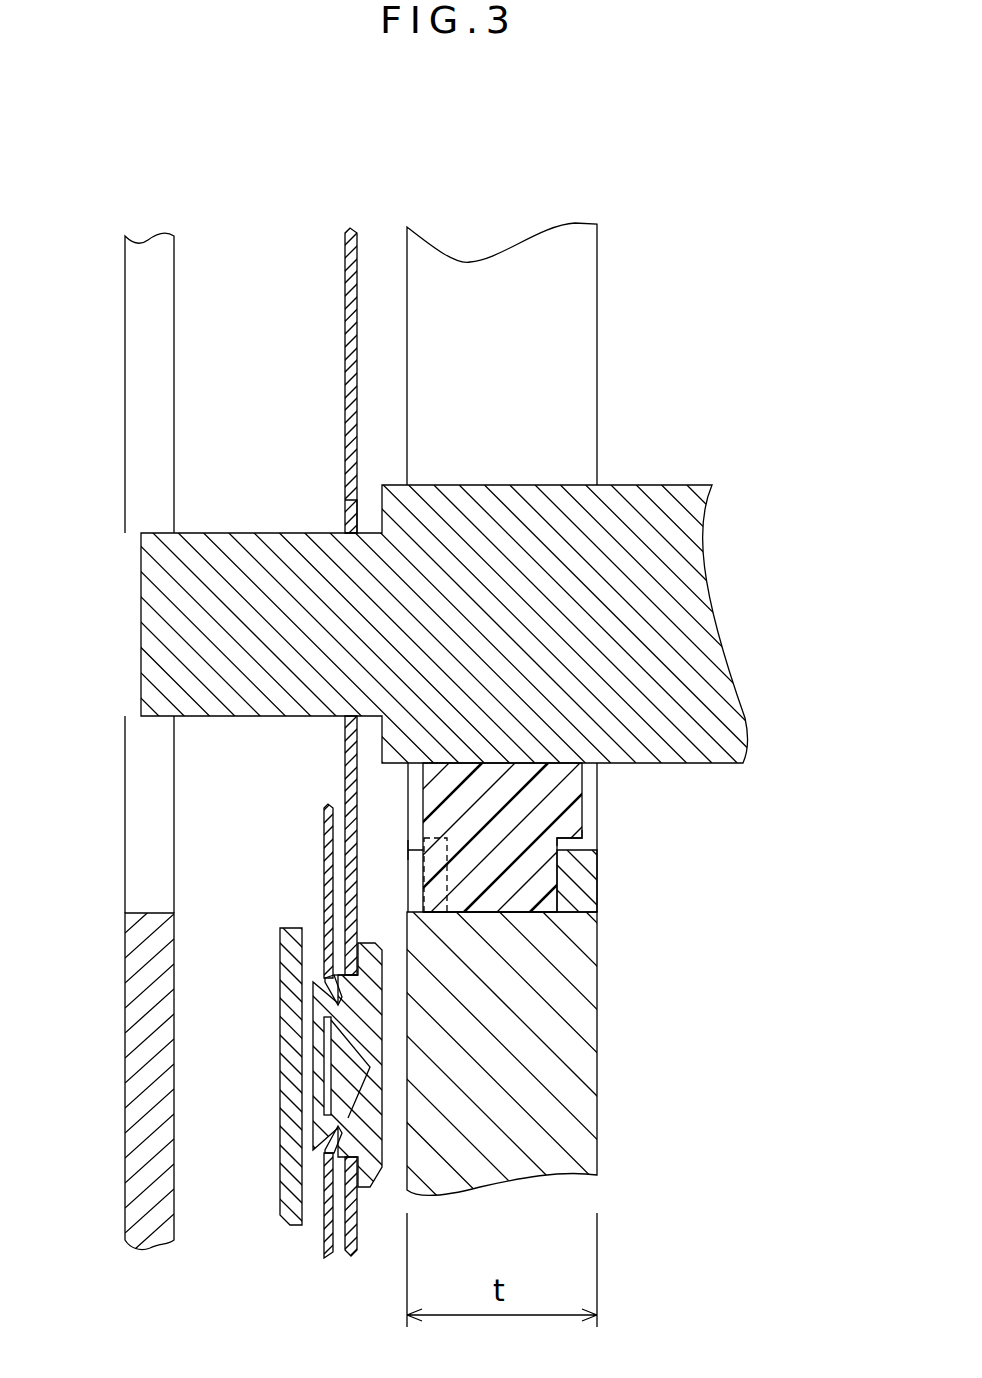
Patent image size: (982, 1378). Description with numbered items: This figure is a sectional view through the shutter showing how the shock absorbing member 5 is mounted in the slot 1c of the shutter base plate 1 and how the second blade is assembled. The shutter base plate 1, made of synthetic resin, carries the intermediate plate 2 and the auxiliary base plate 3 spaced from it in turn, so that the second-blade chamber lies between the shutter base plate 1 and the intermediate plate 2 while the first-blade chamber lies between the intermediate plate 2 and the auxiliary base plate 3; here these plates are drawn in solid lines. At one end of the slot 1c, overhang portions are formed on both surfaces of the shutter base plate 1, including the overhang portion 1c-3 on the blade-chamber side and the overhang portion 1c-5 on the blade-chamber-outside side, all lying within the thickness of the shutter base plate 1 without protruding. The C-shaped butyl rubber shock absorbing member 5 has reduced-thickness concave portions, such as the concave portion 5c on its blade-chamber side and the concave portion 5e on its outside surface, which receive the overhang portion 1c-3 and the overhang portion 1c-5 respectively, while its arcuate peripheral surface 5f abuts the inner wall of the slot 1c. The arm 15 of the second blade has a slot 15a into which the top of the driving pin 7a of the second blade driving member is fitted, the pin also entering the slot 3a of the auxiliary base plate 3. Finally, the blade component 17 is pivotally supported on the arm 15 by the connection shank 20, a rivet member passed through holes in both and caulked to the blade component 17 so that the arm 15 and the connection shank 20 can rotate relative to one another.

The shutter base plate 1 is at (563, 1138).
The slot 1c is at (578, 312).
The overhang portion 1c-3 is at (415, 875).
The overhang portion 1c-5 is at (573, 875).
The intermediate plate 2 is at (292, 1157).
The auxiliary base plate 3 is at (140, 1183).
The slot 3a is at (140, 430).
The shock absorbing member 5 is at (567, 803).
The concave portion 5c is at (424, 842).
The concave portion 5e is at (585, 845).
The arcuate peripheral surface 5f is at (517, 913).
The driving pin 7a is at (630, 518).
The arm 15 is at (345, 352).
The slot 15a is at (340, 530).
The blade component 17 is at (330, 925).
The connection shank 20 is at (353, 1022).